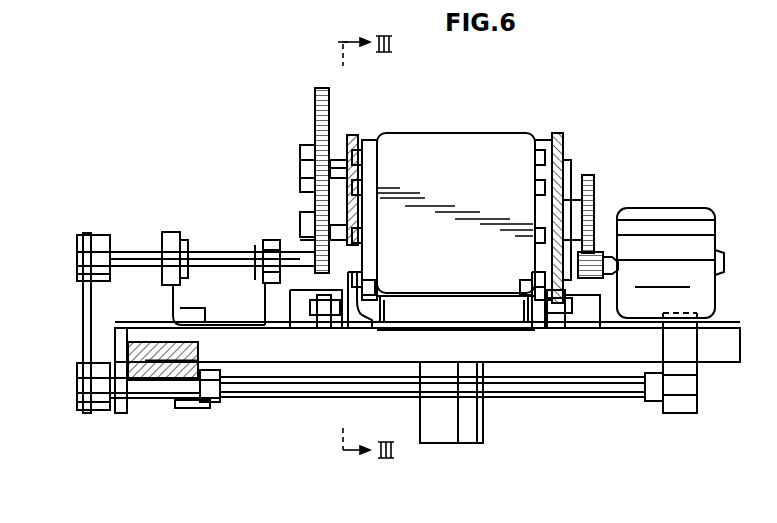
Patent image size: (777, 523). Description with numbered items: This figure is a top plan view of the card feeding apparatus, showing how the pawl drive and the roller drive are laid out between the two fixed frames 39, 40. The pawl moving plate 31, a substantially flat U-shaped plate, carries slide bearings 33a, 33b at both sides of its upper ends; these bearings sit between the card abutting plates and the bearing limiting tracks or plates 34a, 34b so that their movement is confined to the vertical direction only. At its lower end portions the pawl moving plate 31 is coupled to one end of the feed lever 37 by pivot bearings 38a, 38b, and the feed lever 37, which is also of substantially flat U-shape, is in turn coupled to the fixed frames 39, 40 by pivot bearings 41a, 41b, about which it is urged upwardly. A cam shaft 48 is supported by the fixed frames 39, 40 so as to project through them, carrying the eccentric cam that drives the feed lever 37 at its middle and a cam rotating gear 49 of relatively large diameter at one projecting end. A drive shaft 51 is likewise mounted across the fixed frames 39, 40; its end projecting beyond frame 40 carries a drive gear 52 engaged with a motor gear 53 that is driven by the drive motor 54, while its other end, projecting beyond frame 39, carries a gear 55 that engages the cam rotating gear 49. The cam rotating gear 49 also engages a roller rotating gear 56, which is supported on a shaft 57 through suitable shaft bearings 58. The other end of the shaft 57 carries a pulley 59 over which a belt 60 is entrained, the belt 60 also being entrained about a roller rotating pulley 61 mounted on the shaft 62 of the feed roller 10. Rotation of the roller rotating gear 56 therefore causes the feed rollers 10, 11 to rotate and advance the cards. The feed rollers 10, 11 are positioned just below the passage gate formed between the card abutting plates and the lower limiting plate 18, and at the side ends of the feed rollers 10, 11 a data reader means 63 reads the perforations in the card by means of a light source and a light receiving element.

The feed roller 10 is at (688, 403).
The feed roller 11 is at (690, 353).
The lower limiting plate 18 is at (445, 430).
The pawl moving plate 31 is at (397, 325).
The slide bearing 33a is at (323, 320).
The slide bearing 33b is at (575, 320).
The bearing limiting track 34a is at (302, 320).
The bearing limiting track 34b is at (605, 320).
The feed lever 37 is at (455, 135).
The pivot bearing 38a is at (350, 320).
The pivot bearing 38b is at (536, 320).
The fixed frame 39 is at (353, 135).
The fixed frame 40 is at (557, 133).
The pivot bearing 41a is at (378, 135).
The pivot bearing 41b is at (566, 175).
The cam shaft 48 is at (540, 175).
The cam rotating gear 49 is at (315, 108).
The drive shaft 51 is at (590, 190).
The drive gear 52 is at (596, 180).
The motor gear 53 is at (615, 215).
The drive motor 54 is at (700, 235).
The gear 55 is at (312, 207).
The roller rotating gear 56 is at (290, 241).
The shaft 57 is at (137, 252).
The shaft bearing 58 is at (170, 232).
The pulley 59 is at (100, 235).
The belt 60 is at (83, 315).
The roller rotating pulley 61 is at (98, 410).
The shaft 62 is at (145, 398).
The data reader means 63 is at (165, 398).